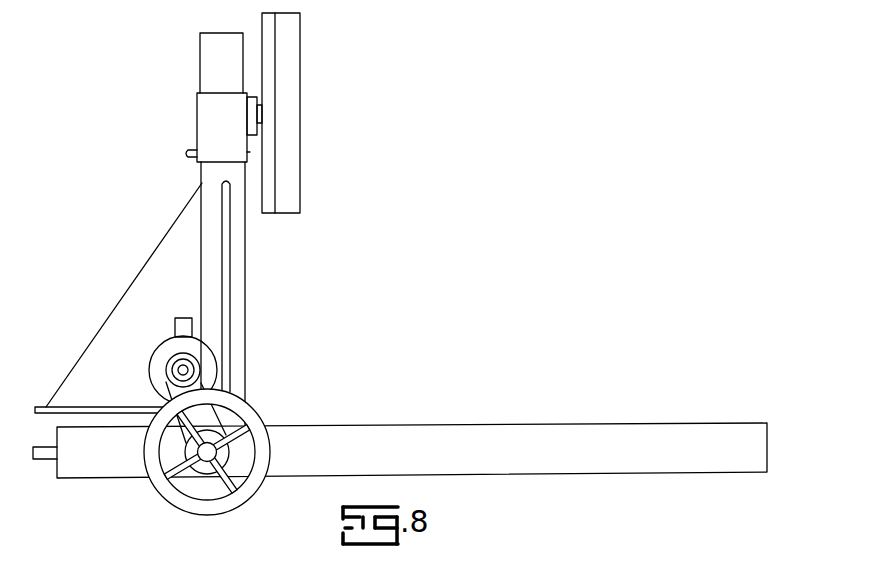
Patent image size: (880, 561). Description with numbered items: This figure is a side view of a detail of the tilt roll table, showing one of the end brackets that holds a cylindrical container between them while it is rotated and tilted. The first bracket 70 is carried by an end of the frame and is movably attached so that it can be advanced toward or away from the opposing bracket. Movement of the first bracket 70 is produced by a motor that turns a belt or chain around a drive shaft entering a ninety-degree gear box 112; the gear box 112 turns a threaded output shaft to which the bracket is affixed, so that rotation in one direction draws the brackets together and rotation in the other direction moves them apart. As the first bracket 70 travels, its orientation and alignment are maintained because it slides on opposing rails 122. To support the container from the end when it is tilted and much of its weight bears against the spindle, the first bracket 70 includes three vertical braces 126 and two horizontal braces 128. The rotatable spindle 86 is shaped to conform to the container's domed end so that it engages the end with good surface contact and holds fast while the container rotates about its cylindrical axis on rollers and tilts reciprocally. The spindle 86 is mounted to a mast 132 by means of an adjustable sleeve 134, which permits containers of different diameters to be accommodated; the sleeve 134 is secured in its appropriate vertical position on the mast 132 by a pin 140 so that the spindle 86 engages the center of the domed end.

The first bracket 70 is at (166, 274).
The spindle 86 is at (290, 214).
The gear box 112 is at (33, 459).
The rail 122 is at (83, 480).
The vertical brace 126 is at (172, 225).
The horizontal brace 128 is at (90, 406).
The mast 132 is at (213, 63).
The adjustable sleeve 134 is at (212, 115).
The pin 140 is at (191, 150).